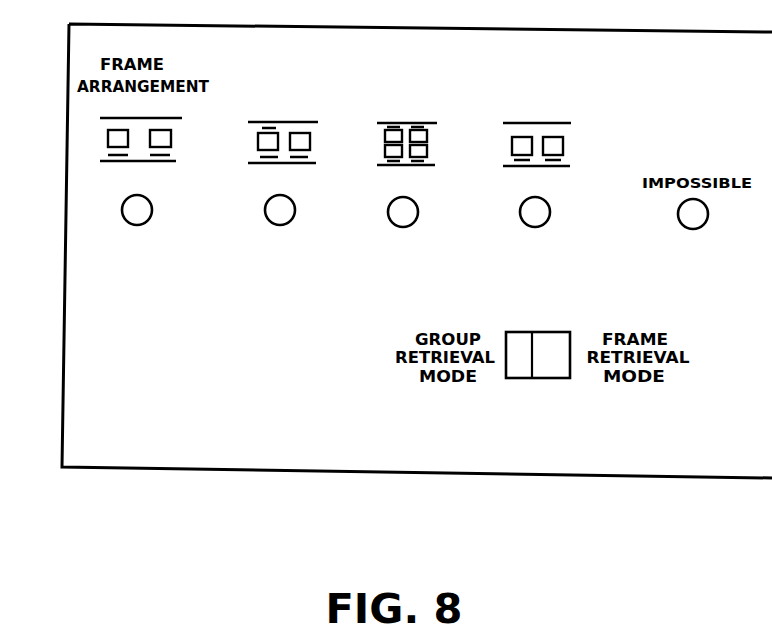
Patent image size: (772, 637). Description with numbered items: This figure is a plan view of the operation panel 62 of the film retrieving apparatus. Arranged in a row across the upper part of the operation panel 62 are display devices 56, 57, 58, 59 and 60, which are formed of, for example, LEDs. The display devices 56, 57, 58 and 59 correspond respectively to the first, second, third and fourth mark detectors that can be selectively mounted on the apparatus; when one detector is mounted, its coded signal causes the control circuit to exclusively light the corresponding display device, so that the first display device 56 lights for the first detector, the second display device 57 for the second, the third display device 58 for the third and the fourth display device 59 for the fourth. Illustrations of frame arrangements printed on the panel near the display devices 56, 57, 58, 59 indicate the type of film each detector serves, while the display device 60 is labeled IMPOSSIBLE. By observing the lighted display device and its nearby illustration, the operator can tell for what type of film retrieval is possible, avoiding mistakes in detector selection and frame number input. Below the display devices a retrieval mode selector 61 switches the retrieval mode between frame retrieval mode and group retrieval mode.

The first display device 56 is at (137, 225).
The second display device 57 is at (280, 225).
The third display device 58 is at (403, 227).
The fourth display device 59 is at (535, 227).
The display device 60 is at (693, 229).
The retrieval mode selector 61 is at (543, 378).
The operation panel 62 is at (727, 477).